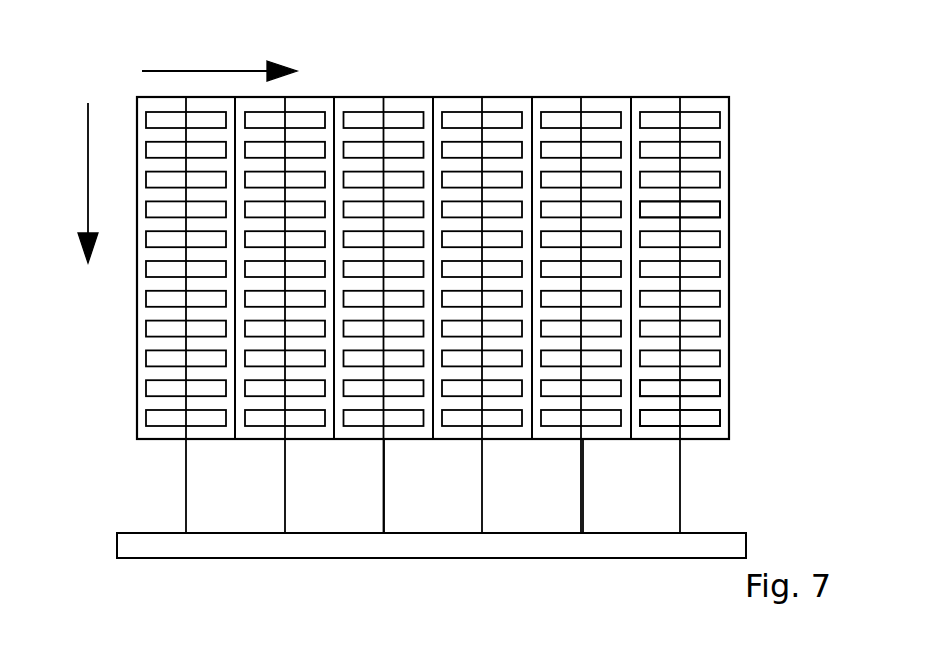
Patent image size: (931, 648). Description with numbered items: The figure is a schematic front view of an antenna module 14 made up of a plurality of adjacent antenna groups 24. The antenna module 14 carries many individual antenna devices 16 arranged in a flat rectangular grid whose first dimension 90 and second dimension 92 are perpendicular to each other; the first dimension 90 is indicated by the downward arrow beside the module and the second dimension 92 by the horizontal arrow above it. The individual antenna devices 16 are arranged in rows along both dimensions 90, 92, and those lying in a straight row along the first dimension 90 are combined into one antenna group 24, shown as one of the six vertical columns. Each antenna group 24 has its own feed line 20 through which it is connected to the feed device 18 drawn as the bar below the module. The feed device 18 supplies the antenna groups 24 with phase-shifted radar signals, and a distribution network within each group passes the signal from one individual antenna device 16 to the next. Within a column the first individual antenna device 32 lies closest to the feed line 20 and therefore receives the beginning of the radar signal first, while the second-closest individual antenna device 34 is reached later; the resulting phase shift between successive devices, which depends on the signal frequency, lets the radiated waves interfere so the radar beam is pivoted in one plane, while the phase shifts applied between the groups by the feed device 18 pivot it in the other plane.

The antenna module 14 is at (138, 343).
The individual antenna device 16 is at (707, 211).
The feed device 18 is at (523, 547).
The feed line 20 is at (384, 483).
The antenna group 24 is at (468, 98).
The first individual antenna device 32 is at (705, 418).
The second-closest individual antenna device 34 is at (705, 383).
The first dimension 90 is at (85, 183).
The second dimension 92 is at (218, 70).